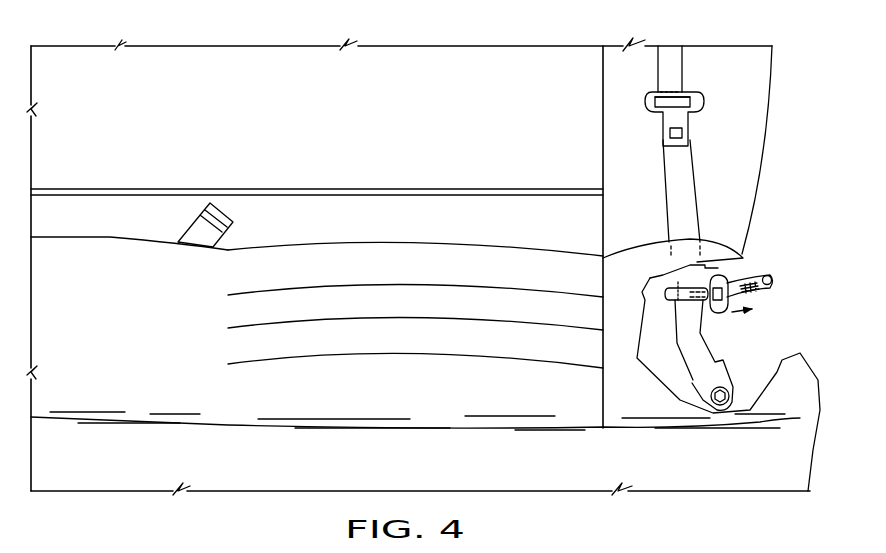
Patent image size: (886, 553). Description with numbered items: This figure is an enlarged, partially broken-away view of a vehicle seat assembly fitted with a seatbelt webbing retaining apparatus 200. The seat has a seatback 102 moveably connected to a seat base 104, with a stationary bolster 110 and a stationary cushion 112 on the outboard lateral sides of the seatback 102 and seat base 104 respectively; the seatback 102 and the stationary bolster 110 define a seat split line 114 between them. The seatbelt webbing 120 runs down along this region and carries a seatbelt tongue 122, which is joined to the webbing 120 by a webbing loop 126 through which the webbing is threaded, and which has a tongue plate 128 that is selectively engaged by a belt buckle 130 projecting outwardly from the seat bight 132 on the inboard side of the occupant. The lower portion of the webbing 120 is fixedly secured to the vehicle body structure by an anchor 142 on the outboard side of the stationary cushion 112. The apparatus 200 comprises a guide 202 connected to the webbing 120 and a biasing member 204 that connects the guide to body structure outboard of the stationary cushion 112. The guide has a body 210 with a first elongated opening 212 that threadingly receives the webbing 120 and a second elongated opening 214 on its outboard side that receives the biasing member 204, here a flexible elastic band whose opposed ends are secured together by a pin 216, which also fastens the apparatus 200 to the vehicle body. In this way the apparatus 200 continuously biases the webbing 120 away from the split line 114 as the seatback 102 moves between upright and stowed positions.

The seatback 102 is at (270, 62).
The seat base 104 is at (341, 398).
The stationary bolster 110 is at (733, 165).
The stationary cushion 112 is at (798, 393).
The seat split line 114 is at (603, 125).
The seatbelt webbing 120 is at (655, 65).
The seatbelt tongue 122 is at (706, 100).
The webbing loop 126 is at (695, 97).
The tongue plate 128 is at (686, 136).
The belt buckle 130 is at (195, 223).
The seat bight 132 is at (113, 237).
The anchor 142 is at (707, 390).
The seatbelt webbing retaining apparatus 200 is at (677, 337).
The guide 202 is at (658, 309).
The biasing member 204 is at (762, 290).
The body 210 is at (642, 292).
The first elongated opening 212 is at (680, 293).
The second elongated opening 214 is at (717, 288).
The pin 216 is at (771, 280).